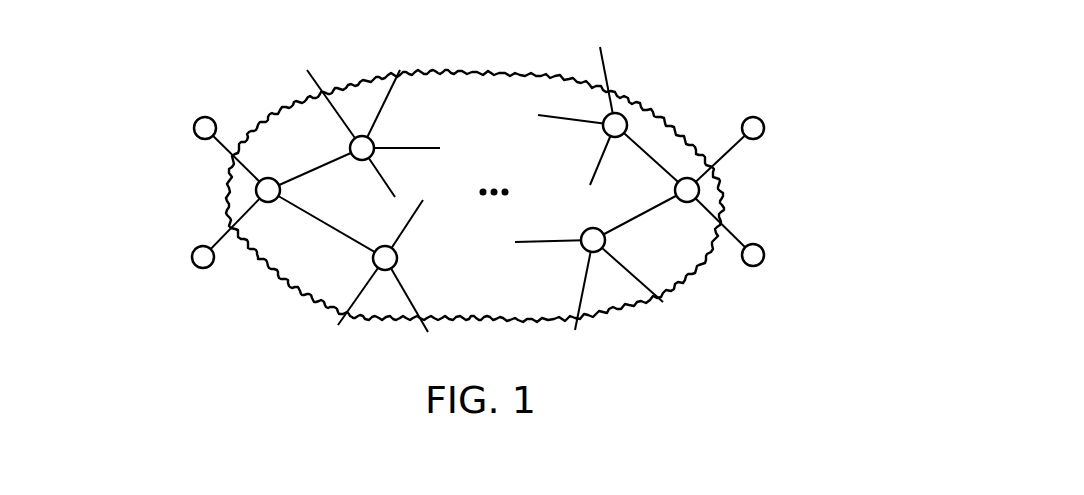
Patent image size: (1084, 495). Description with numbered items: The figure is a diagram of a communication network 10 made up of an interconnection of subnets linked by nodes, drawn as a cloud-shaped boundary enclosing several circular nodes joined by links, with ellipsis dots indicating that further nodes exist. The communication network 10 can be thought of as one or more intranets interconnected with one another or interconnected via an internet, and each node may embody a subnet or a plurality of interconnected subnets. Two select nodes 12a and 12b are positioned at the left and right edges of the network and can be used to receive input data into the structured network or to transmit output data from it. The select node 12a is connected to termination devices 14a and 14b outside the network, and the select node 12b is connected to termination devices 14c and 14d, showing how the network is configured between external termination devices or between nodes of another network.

The communication network 10 is at (723, 70).
The select node 12a is at (268, 203).
The select node 12b is at (686, 203).
The termination device 14a is at (193, 128).
The termination device 14b is at (191, 257).
The termination device 14c is at (765, 129).
The termination device 14d is at (765, 256).